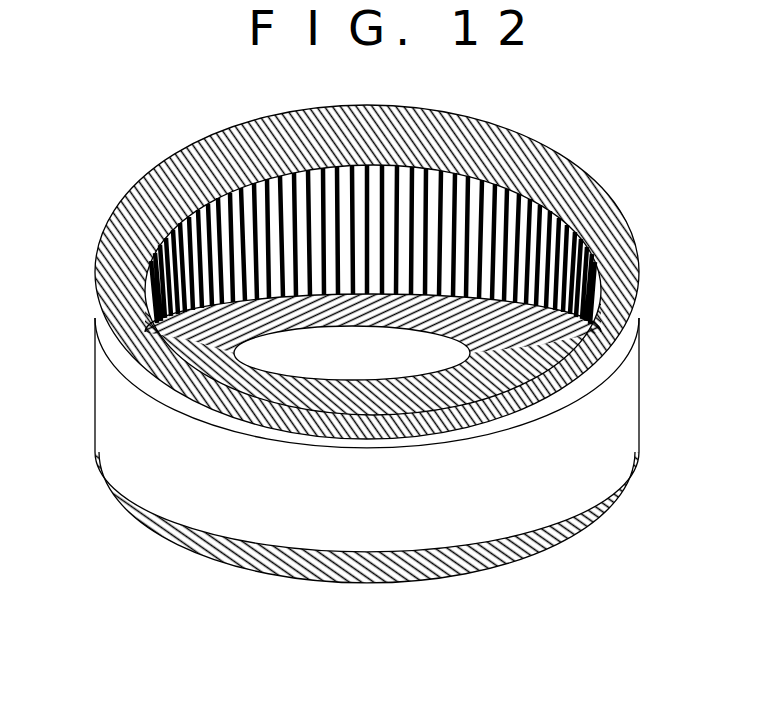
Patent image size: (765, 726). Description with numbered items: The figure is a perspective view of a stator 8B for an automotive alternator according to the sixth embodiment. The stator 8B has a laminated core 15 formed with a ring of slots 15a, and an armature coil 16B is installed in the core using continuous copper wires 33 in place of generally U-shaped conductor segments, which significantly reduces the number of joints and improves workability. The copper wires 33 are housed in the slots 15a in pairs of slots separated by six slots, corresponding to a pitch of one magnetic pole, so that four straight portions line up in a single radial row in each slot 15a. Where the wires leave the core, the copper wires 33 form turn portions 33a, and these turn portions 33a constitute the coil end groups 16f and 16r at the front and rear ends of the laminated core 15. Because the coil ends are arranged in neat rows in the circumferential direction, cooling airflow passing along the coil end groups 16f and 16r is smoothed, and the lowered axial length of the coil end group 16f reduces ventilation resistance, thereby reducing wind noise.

The stator 8B is at (374, 344).
The laminated core 15 is at (645, 332).
The slots 15a is at (592, 387).
The armature coil 16B is at (710, 267).
The rear coil end group 16r is at (117, 222).
The front coil end group 16f is at (127, 503).
The continuous copper wires 33 is at (618, 208).
The turn portions 33a is at (593, 184).